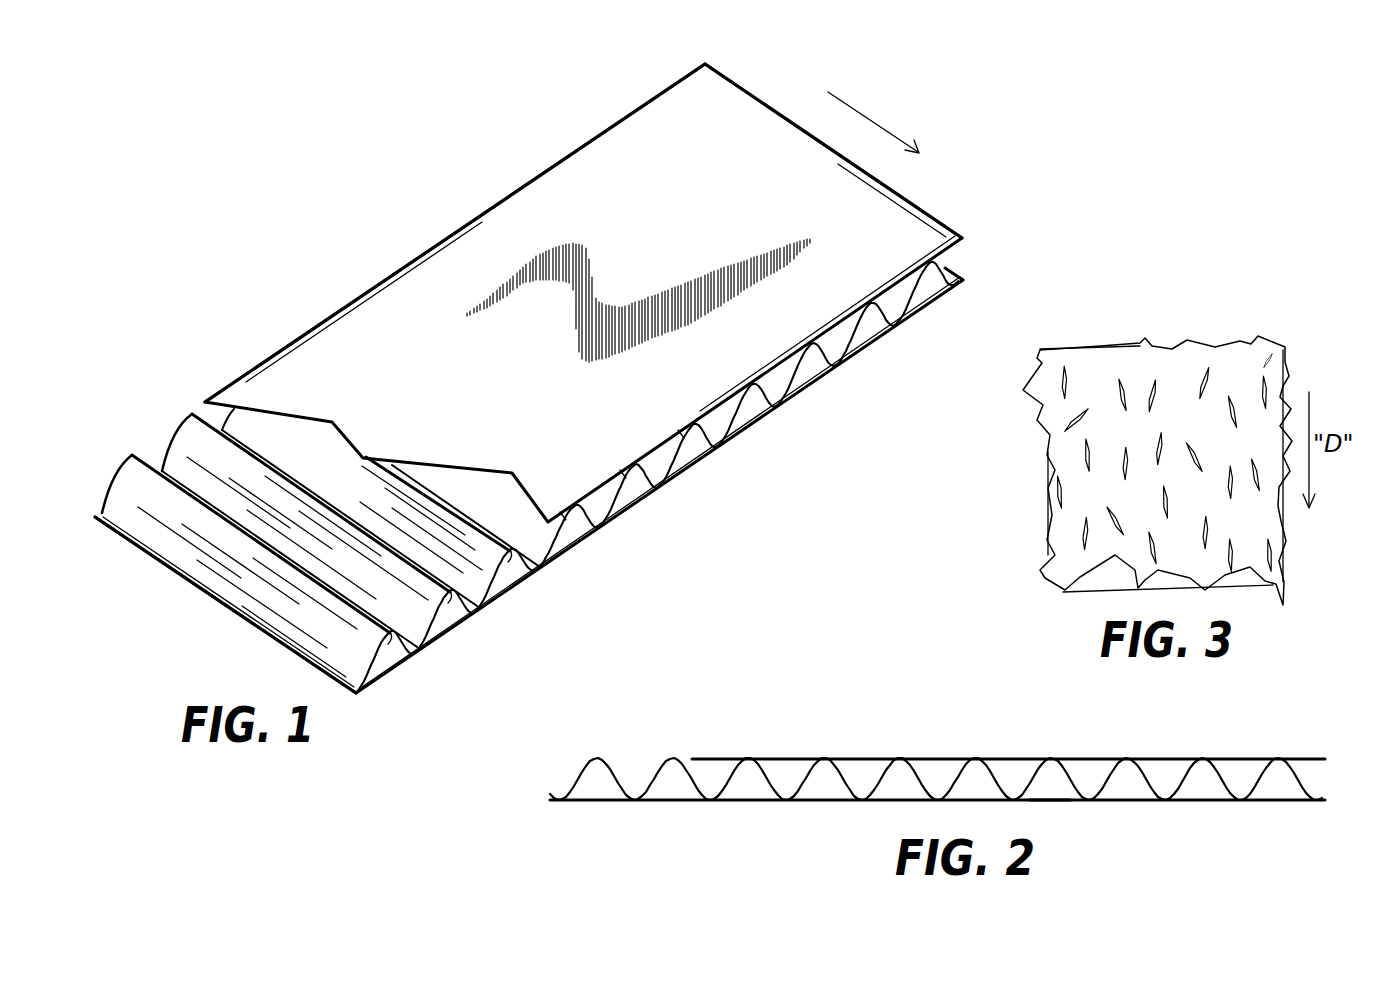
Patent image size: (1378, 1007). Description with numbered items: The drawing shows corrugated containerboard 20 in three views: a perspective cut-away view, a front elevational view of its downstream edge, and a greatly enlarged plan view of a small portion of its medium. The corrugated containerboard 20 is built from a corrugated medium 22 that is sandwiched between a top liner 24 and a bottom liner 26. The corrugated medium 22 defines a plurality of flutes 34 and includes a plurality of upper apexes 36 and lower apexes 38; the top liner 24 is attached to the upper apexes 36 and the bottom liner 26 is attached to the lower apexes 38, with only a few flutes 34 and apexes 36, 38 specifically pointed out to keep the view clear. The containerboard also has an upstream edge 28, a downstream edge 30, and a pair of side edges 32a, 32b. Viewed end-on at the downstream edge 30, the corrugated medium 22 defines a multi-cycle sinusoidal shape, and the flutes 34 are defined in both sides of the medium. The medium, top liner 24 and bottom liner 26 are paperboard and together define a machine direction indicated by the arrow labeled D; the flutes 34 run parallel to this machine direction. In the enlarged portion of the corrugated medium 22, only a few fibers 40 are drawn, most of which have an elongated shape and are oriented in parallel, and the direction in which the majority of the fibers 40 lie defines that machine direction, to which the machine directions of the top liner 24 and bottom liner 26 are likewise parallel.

In FIG. 1, the corrugated containerboard 20 is at (368, 229).
In FIG. 2, the corrugated containerboard 20 is at (663, 738).
In FIG. 1, the corrugated medium 22 is at (585, 536).
In FIG. 2, the corrugated medium 22 is at (1304, 779).
In FIG. 3, the corrugated medium 22 is at (1226, 340).
In FIG. 1, the top liner 24 is at (628, 148).
In FIG. 2, the top liner 24 is at (1163, 757).
In FIG. 1, the bottom liner 26 is at (928, 300).
In FIG. 2, the bottom liner 26 is at (1203, 805).
In FIG. 1, the upstream edge 28 is at (532, 181).
In FIG. 1, the downstream edge 30 is at (881, 331).
In FIG. 2, the downstream edge 30 is at (1050, 803).
In FIG. 1, the side edge 32a is at (147, 557).
In FIG. 1, the side edge 32b is at (753, 96).
In FIG. 1, the flutes 34 is at (412, 626).
In FIG. 2, the flutes 34 is at (1089, 778).
In FIG. 1, the upper apexes 36 is at (133, 454).
In FIG. 1, the lower apexes 38 is at (163, 468).
In FIG. 3, the fibers 40 is at (1120, 392).